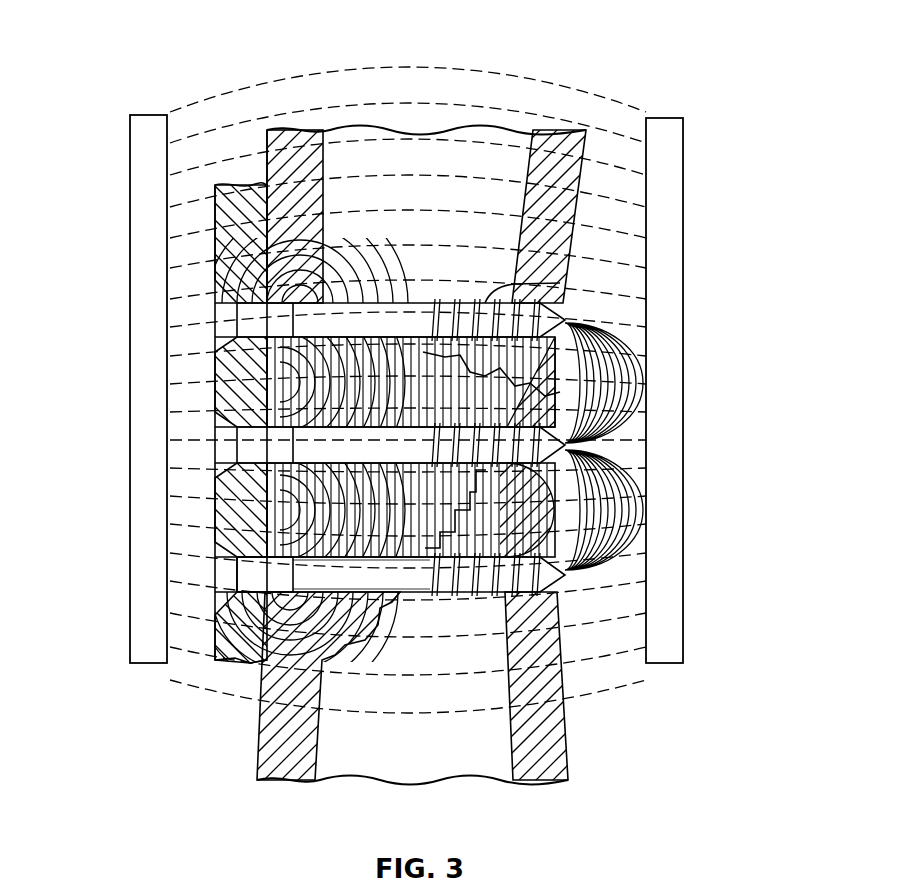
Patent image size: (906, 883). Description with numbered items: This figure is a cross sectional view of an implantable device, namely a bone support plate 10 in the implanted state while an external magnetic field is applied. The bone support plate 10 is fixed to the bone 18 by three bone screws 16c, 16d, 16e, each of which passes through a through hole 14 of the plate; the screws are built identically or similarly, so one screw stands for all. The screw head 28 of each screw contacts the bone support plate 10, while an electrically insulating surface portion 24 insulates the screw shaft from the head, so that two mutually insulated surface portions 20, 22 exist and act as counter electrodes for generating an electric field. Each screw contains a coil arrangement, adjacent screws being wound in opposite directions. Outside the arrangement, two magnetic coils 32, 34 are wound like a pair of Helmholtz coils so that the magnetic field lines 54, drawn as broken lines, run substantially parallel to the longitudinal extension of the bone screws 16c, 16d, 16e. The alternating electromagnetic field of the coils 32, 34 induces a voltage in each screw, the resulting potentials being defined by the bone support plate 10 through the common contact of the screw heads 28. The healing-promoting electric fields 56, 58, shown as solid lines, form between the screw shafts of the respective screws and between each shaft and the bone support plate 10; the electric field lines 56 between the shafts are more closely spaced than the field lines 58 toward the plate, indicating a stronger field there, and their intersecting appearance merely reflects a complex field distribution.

The bone support plate 10 is at (230, 648).
The through hole 14 is at (215, 628).
The bone screw 16c is at (565, 575).
The bone screw 16d is at (565, 445).
The bone screw 16e is at (565, 320).
The bone 18 is at (555, 130).
The surface portion 20 is at (225, 300).
The surface portion 22 is at (580, 284).
The electrically insulating surface portion 24 is at (257, 567).
The screw head 28 is at (217, 583).
The magnetic coil 32 is at (130, 150).
The magnetic coil 34 is at (683, 163).
The magnetic field lines 54 is at (468, 175).
The electric field lines 56 is at (600, 520).
The electric field lines 58 is at (356, 245).